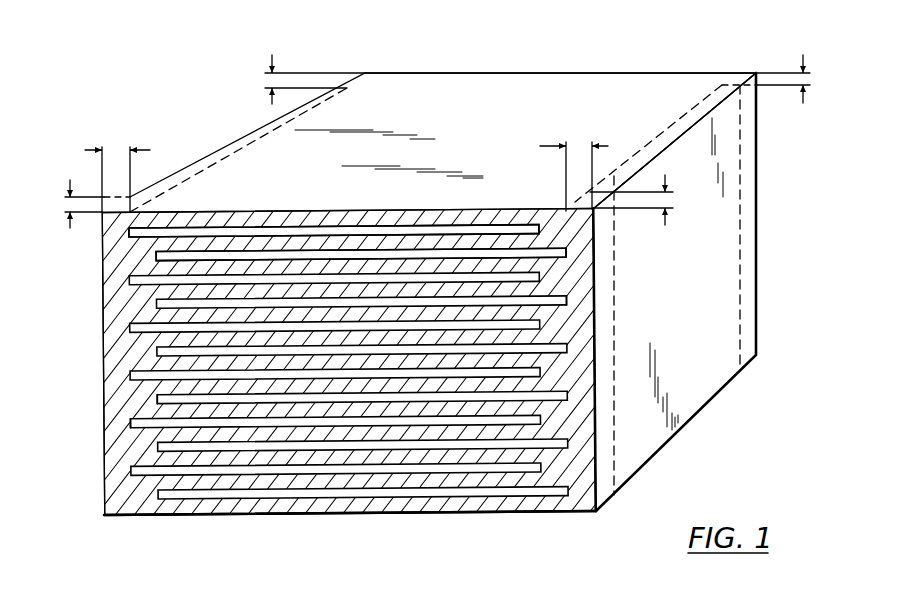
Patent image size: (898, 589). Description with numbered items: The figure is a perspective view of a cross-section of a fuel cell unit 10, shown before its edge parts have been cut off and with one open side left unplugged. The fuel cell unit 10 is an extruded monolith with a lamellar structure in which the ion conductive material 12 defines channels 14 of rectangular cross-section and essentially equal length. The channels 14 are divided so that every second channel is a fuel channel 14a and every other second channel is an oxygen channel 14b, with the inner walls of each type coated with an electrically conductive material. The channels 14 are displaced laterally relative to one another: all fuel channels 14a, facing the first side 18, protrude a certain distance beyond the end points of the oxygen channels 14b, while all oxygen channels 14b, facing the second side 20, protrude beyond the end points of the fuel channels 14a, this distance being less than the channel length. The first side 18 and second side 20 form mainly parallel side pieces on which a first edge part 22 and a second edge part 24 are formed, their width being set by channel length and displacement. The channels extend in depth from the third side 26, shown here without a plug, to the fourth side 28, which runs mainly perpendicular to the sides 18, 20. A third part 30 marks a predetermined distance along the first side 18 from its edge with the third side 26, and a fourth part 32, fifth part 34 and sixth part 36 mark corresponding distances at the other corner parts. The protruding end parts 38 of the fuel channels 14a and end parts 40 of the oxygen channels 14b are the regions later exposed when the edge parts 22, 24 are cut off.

The fuel cell unit 10 is at (151, 84).
The ion conductive material 12 is at (115, 312).
The channels 14 is at (168, 256).
The fuel channels 14a is at (139, 330).
The oxygen channels 14b is at (167, 351).
The first side 18 is at (222, 143).
The second side 20 is at (681, 383).
The first edge part 22 is at (118, 148).
The second edge part 24 is at (579, 144).
The third side 26 is at (172, 516).
The fourth side 28 is at (520, 73).
The third part 30 is at (70, 204).
The fourth part 32 is at (272, 82).
The fifth part 34 is at (667, 200).
The sixth part 36 is at (805, 83).
The end parts of the fuel channels 38 is at (140, 423).
The end parts of the oxygen channels 40 is at (567, 253).